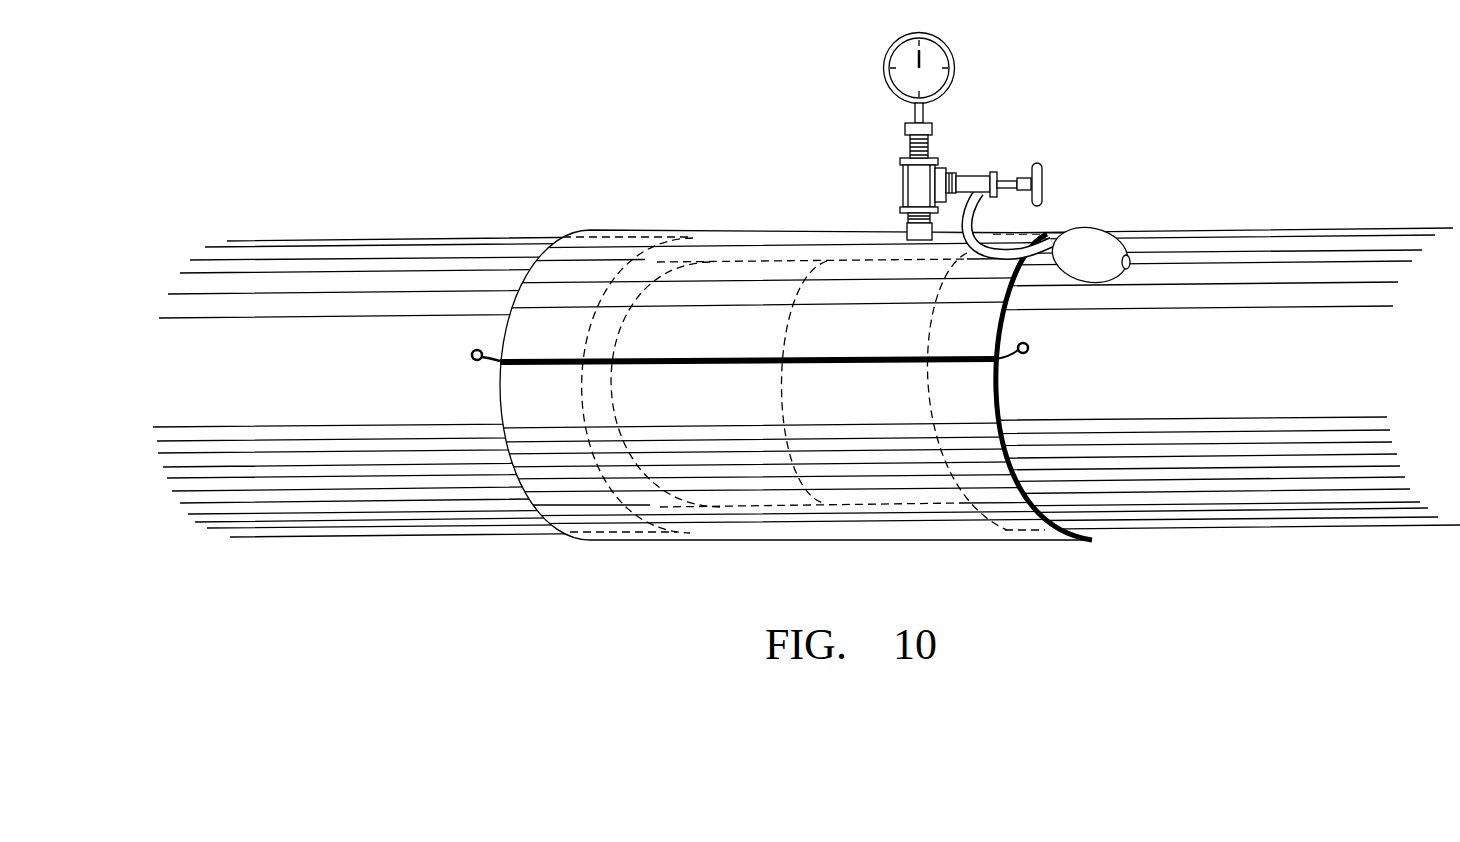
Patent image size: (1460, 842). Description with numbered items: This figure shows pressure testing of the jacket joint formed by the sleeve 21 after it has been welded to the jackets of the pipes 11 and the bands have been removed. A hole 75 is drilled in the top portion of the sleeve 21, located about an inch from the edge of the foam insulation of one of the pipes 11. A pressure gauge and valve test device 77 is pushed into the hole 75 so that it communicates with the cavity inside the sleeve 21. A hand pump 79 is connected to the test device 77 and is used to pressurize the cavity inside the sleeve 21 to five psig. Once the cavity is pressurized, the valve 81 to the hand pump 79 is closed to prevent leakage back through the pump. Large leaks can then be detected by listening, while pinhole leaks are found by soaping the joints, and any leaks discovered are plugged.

The pipe 11 is at (422, 257).
The sleeve 21 is at (733, 232).
The hole 75 is at (903, 236).
The pressure gauge and valve test device 77 is at (903, 140).
The hand pump 79 is at (1108, 233).
The valve 81 is at (1040, 158).